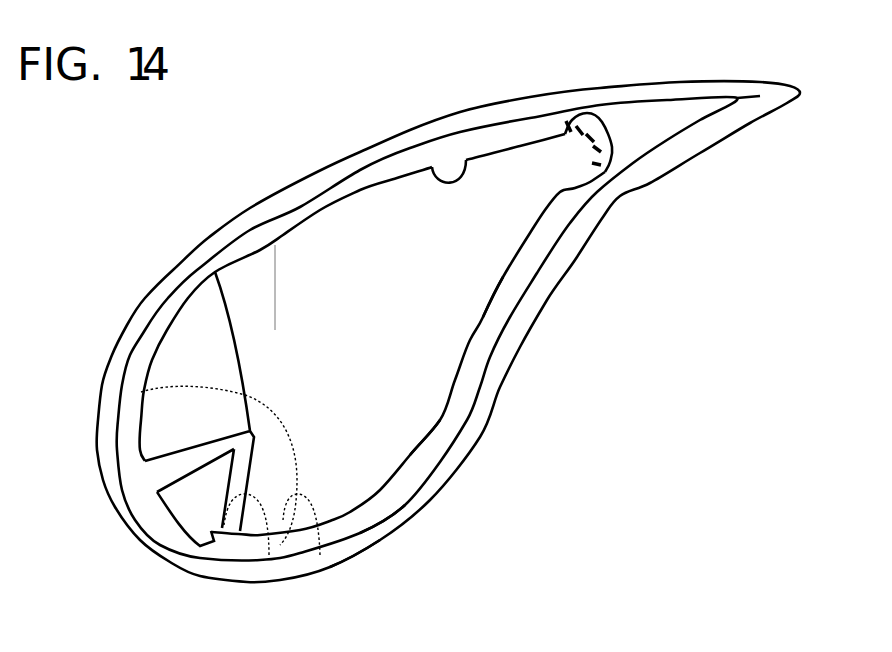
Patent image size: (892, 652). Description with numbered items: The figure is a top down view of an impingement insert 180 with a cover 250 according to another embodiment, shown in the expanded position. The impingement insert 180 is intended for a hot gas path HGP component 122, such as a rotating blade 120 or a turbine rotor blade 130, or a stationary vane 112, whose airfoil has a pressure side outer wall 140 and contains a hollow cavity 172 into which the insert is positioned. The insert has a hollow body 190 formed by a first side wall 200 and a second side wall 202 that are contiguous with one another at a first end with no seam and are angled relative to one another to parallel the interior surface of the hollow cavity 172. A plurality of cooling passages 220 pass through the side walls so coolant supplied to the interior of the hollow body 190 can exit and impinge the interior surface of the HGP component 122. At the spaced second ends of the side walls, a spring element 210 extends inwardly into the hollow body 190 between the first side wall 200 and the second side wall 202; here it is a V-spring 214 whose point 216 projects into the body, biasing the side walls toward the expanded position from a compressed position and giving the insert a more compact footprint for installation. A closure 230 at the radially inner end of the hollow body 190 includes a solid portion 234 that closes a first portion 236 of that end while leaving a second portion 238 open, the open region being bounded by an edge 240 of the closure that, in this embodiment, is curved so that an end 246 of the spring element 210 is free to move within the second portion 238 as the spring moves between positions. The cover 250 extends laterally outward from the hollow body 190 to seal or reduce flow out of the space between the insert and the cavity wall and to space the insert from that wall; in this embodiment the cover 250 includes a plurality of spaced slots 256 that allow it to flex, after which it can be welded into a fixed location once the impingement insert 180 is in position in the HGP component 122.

The HGP component 122 is at (700, 178).
The rotating blades 120 is at (472, 328).
The turbine rotor blade 130 is at (472, 328).
The stationary vane 112 is at (472, 328).
The pressure side outer wall 140 is at (550, 337).
The hollow cavity 172 is at (620, 123).
The impingement insert 180 is at (591, 100).
The hollow body 190 is at (383, 216).
The first side wall 200 is at (360, 513).
The second side wall 202 is at (220, 277).
The spring element 210 is at (190, 467).
The V-spring 214 is at (206, 511).
The point 216 is at (197, 298).
The cooling passages 220 is at (400, 497).
The closure 230 is at (412, 434).
The solid portion 234 is at (352, 327).
The first portion 236 is at (470, 152).
The second portion 238 is at (207, 397).
The edge 240 is at (320, 555).
The end of spring element 246 is at (269, 555).
The cover 250 is at (477, 353).
The spaced slots 256 is at (592, 170).